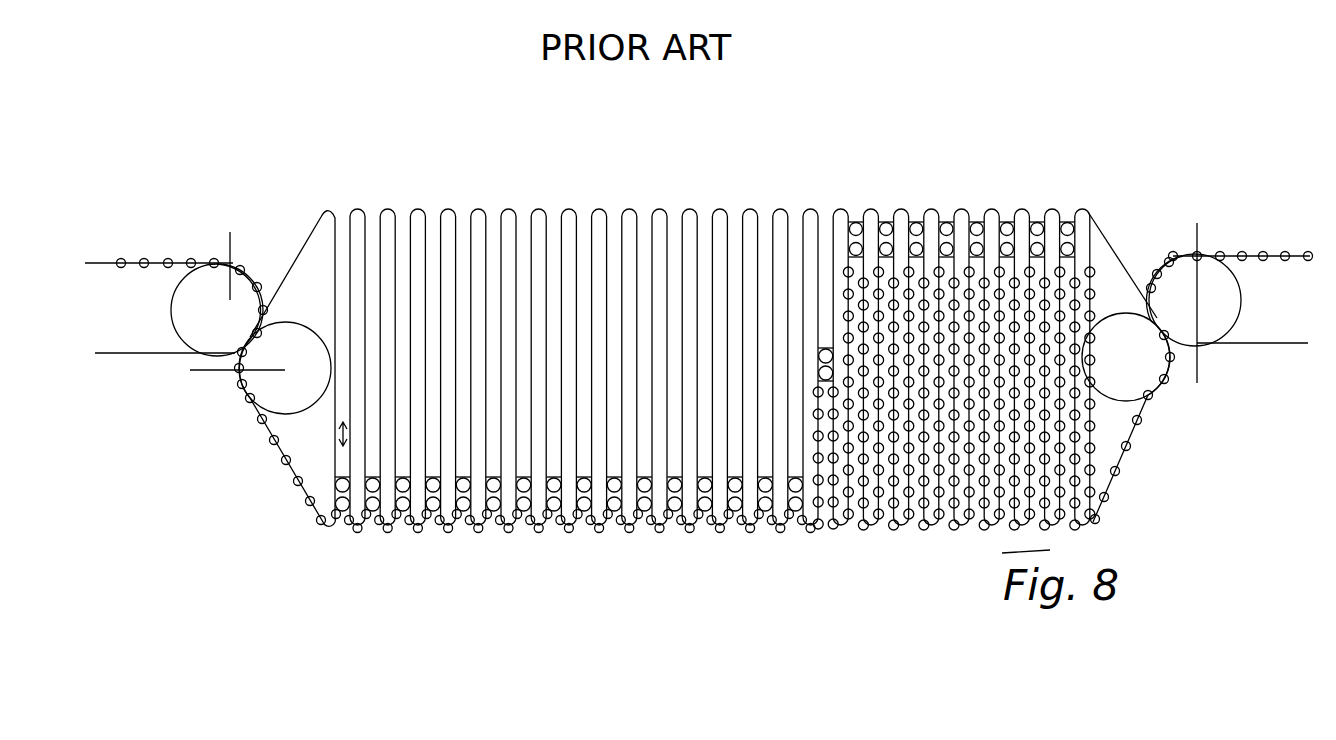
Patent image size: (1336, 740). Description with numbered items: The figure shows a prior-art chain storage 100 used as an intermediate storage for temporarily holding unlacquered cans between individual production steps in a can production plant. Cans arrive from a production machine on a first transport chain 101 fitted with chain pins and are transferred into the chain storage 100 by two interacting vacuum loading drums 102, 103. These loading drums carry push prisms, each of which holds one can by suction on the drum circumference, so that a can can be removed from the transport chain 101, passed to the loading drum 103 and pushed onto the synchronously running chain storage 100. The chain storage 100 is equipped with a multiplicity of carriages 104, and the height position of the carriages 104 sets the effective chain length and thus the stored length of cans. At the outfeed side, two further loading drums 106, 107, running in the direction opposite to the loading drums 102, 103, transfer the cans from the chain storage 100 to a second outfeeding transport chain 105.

The chain storage 100 is at (650, 574).
The first transport chain 101 is at (1230, 260).
The vacuum loading drum 102 is at (1207, 343).
The loading drum 103 is at (1112, 330).
The carriages 104 is at (858, 223).
The second outfeeding transport chain 105 is at (105, 263).
The further loading drum 106 is at (250, 398).
The further loading drum 107 is at (233, 267).